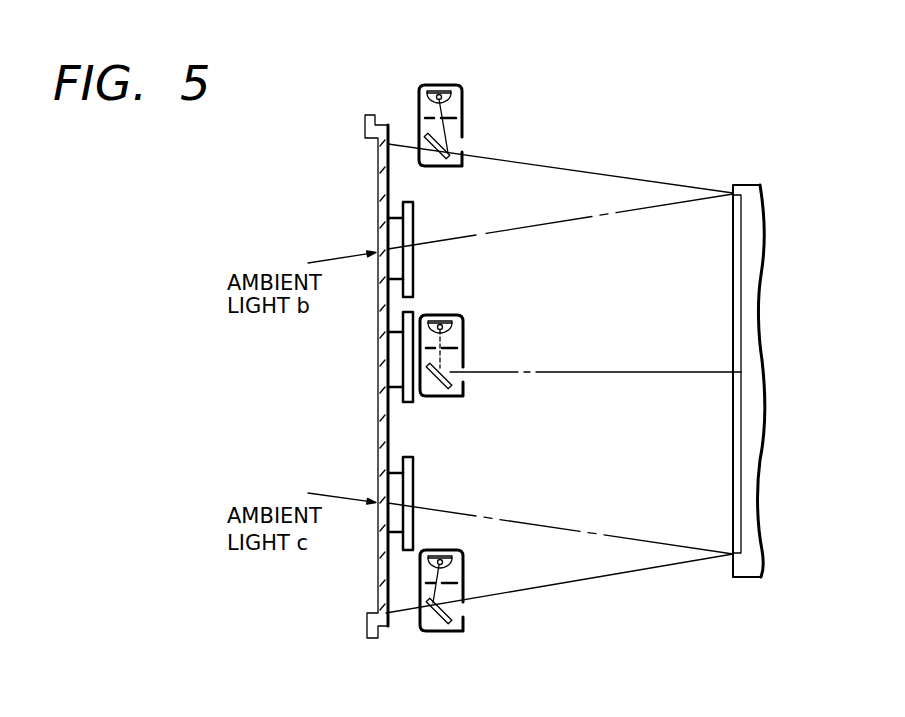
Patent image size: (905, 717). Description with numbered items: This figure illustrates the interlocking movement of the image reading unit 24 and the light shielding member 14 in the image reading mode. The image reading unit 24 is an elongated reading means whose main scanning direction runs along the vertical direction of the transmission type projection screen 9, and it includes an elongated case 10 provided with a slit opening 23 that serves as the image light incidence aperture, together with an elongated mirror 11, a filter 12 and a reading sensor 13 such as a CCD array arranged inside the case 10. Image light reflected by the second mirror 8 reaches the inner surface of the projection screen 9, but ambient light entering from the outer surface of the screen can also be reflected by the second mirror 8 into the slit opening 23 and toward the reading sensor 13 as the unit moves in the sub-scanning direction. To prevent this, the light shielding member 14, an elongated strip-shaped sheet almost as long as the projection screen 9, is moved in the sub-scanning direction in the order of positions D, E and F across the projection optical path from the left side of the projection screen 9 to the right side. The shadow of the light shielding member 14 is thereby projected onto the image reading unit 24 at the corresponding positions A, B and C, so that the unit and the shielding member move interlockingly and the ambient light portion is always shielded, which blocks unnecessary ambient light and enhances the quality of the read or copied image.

The second mirror 8 is at (759, 280).
The transmission type projection screen 9 is at (377, 208).
The case 10 is at (418, 118).
The mirror 11 is at (448, 153).
The filter 12 is at (451, 114).
The reading sensor 13 is at (448, 91).
The light shielding member 14 is at (435, 227).
The slit opening 23 is at (461, 147).
The image reading unit 24 is at (451, 116).
The sensor unit A is at (451, 125).
The sensor unit B is at (469, 406).
The sensor unit C is at (469, 640).
The first light shielding member position D is at (420, 279).
The second light shielding member position E is at (419, 413).
The third light shielding member position F is at (422, 532).